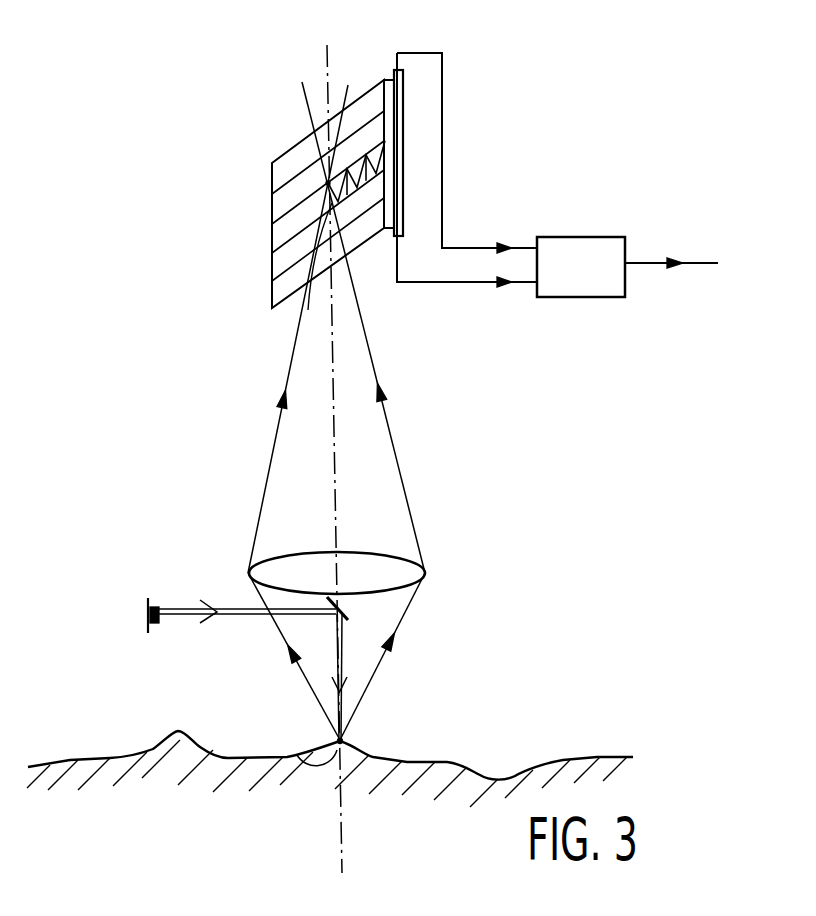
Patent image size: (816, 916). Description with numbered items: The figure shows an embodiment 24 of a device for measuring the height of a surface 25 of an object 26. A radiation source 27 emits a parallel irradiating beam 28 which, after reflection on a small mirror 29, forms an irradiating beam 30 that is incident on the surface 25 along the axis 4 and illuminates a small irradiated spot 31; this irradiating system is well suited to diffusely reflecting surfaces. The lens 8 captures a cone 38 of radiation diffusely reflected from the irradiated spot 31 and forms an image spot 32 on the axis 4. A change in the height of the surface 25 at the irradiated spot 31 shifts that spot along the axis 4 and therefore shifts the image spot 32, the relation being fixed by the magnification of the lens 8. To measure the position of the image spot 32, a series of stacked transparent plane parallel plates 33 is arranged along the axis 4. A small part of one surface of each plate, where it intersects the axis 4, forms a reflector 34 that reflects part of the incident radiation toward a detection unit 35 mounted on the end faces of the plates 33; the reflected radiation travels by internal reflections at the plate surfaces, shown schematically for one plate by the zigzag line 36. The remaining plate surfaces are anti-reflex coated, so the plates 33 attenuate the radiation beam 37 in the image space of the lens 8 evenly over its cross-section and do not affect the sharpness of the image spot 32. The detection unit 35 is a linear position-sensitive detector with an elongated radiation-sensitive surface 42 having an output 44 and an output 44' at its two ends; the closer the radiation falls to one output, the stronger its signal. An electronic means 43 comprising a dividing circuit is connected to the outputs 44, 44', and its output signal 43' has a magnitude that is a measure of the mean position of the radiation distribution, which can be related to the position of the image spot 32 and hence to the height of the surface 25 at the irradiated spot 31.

The axis 4 is at (343, 823).
The lens 8 is at (426, 573).
The height-measuring device 24 is at (122, 349).
The surface 25 is at (60, 765).
The object 26 is at (128, 841).
The radiation source 27 is at (150, 605).
The parallel irradiating beam 28 is at (186, 607).
The small mirror 29 is at (350, 607).
The irradiating beam 30 is at (343, 645).
The irradiated spot 31 is at (301, 755).
The image spot 32 is at (300, 198).
The stacked transparent plane parallel plates 33 is at (272, 258).
The reflector 34 is at (330, 290).
The detection unit 35 is at (397, 69).
The zigzag line 36 is at (368, 176).
The radiation beam 37 is at (402, 491).
The cone of radiation 38 is at (366, 684).
The elongated radiation-sensitive surface 42 is at (386, 80).
The electronic means 43 is at (581, 240).
The output signal 43' is at (672, 242).
The output for electric signals 44 is at (467, 146).
The output for electric signals 44' is at (428, 302).